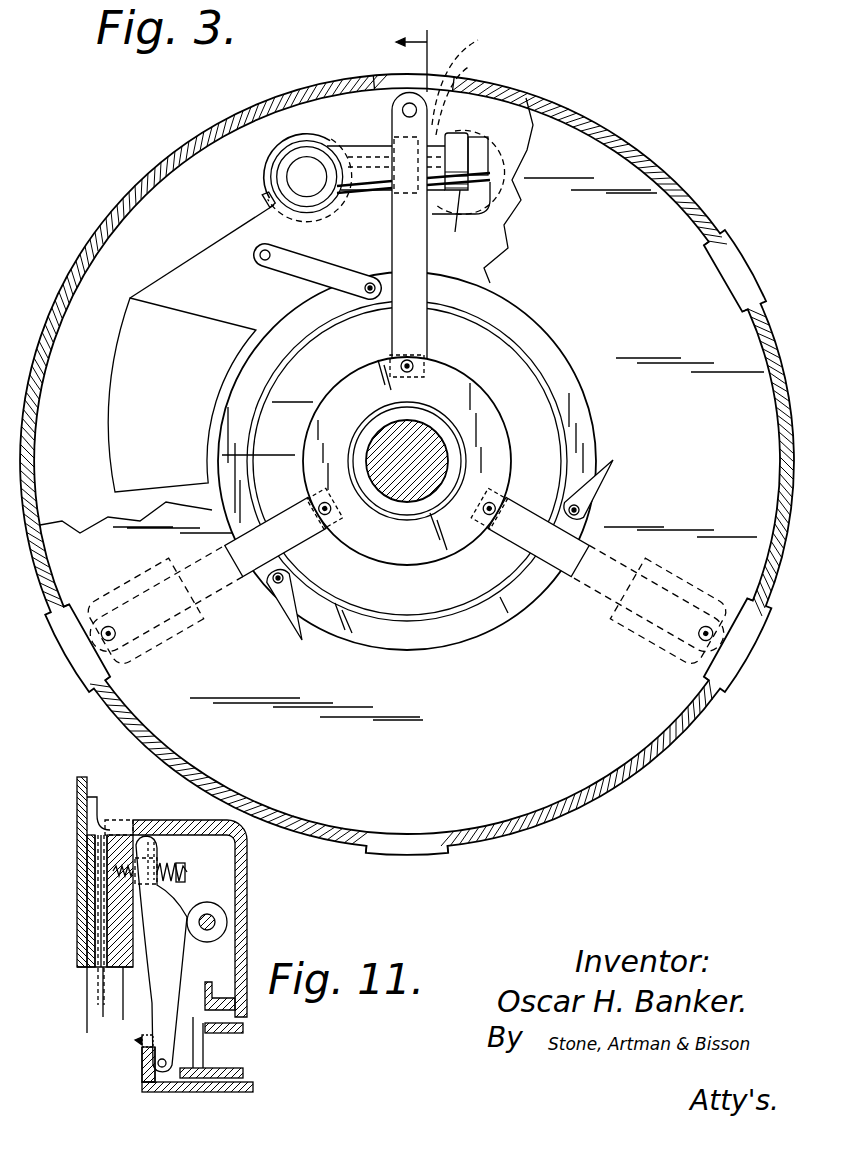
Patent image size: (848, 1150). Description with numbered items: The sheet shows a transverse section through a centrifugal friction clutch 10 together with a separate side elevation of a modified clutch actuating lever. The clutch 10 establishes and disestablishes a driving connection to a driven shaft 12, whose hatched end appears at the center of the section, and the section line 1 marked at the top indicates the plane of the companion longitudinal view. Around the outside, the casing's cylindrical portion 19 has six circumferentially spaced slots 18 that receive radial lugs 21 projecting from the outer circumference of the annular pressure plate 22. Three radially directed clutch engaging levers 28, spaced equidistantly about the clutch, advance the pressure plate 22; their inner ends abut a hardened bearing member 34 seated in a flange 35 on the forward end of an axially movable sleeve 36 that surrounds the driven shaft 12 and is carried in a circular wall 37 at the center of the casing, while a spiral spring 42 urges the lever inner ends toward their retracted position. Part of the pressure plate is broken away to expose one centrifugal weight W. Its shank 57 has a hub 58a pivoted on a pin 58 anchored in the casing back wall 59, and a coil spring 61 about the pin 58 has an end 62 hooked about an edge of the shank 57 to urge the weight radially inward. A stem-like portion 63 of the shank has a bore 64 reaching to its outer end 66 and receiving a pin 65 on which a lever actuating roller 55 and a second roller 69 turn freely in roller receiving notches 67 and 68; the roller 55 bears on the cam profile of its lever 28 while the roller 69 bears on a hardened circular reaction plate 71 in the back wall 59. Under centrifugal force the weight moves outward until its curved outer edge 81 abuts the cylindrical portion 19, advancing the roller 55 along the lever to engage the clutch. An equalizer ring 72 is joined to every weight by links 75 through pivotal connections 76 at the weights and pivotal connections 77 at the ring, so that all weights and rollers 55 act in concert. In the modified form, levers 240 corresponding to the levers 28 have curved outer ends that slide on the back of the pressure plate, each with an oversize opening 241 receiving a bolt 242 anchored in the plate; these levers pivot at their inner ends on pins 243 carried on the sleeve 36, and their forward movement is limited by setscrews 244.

In FIG. 3, the section line 1 is at (422, 53).
In FIG. 3, the friction clutch 10 is at (630, 136).
In FIG. 3, the driven shaft 12 is at (382, 428).
In FIG. 3, the slots 18 is at (92, 250).
In FIG. 3, the cylindrical portion 19 is at (150, 177).
In FIG. 3, the radial lugs 21 is at (92, 682).
In FIG. 3, the annular pressure plate 22 is at (438, 481).
In FIG. 11, the annular pressure plate 22 is at (115, 853).
In FIG. 3, the clutch engaging levers 28 is at (428, 292).
In FIG. 3, the hardened bearing member 34 is at (413, 373).
In FIG. 3, the flange 35 is at (490, 406).
In FIG. 11, the sleeve 36 is at (253, 1088).
In FIG. 11, the circular wall 37 is at (243, 1068).
In FIG. 11, the spiral spring 42 is at (243, 1030).
In FIG. 3, the lever actuating roller 55 is at (392, 111).
In FIG. 11, the lever actuating roller 55 is at (223, 925).
In FIG. 3, the weight shank 57 is at (336, 233).
In FIG. 3, the pin 58 is at (287, 178).
In FIG. 3, the hub 58a is at (277, 171).
In FIG. 3, the back wall 59 is at (157, 369).
In FIG. 3, the coil spring 61 is at (310, 134).
In FIG. 3, the spring end 62 is at (268, 203).
In FIG. 3, the stem-like portion 63 is at (372, 148).
In FIG. 3, the bore 64 is at (470, 74).
In FIG. 3, the pin 65 is at (472, 91).
In FIG. 3, the outer end 66 is at (488, 140).
In FIG. 3, the roller receiving notch 67 is at (392, 212).
In FIG. 3, the roller receiving notch 68 is at (457, 220).
In FIG. 3, the second roller 69 is at (458, 133).
In FIG. 3, the circular reaction plate 71 is at (494, 214).
In FIG. 3, the equalizer ring 72 is at (548, 341).
In FIG. 3, the links 75 is at (290, 268).
In FIG. 3, the pivotal connections 76 is at (260, 259).
In FIG. 3, the pivotal connections 77 is at (356, 297).
In FIG. 3, the curved outer edge 81 is at (110, 408).
In FIG. 11, the levers 240 is at (163, 990).
In FIG. 11, the oversize opening 241 is at (155, 837).
In FIG. 11, the bolt 242 is at (189, 870).
In FIG. 11, the pins 243 is at (142, 1072).
In FIG. 11, the setscrews 244 is at (140, 1035).